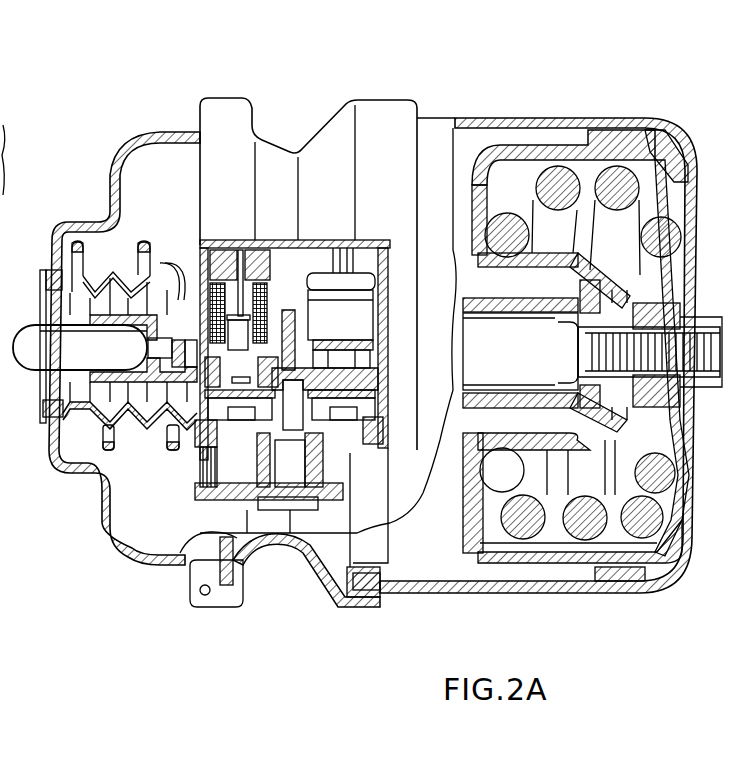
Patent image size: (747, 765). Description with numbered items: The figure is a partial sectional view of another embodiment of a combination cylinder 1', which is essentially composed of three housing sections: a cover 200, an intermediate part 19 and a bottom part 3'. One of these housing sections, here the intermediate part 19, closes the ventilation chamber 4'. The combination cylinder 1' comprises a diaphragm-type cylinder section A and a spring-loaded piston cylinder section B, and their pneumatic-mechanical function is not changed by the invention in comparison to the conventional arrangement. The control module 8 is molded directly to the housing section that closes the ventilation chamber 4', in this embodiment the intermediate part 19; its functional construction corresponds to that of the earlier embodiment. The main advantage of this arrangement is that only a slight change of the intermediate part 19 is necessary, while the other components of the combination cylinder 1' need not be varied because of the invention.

The combination cylinder 1' is at (105, 221).
The cover 200 is at (160, 138).
The intermediate part 19 is at (255, 118).
The control module 8 is at (328, 225).
The bottom part 3' is at (525, 327).
The spring-loaded piston cylinder section B is at (565, 141).
The diaphragm-type cylinder section A is at (153, 522).
The ventilation chamber 4' is at (280, 584).